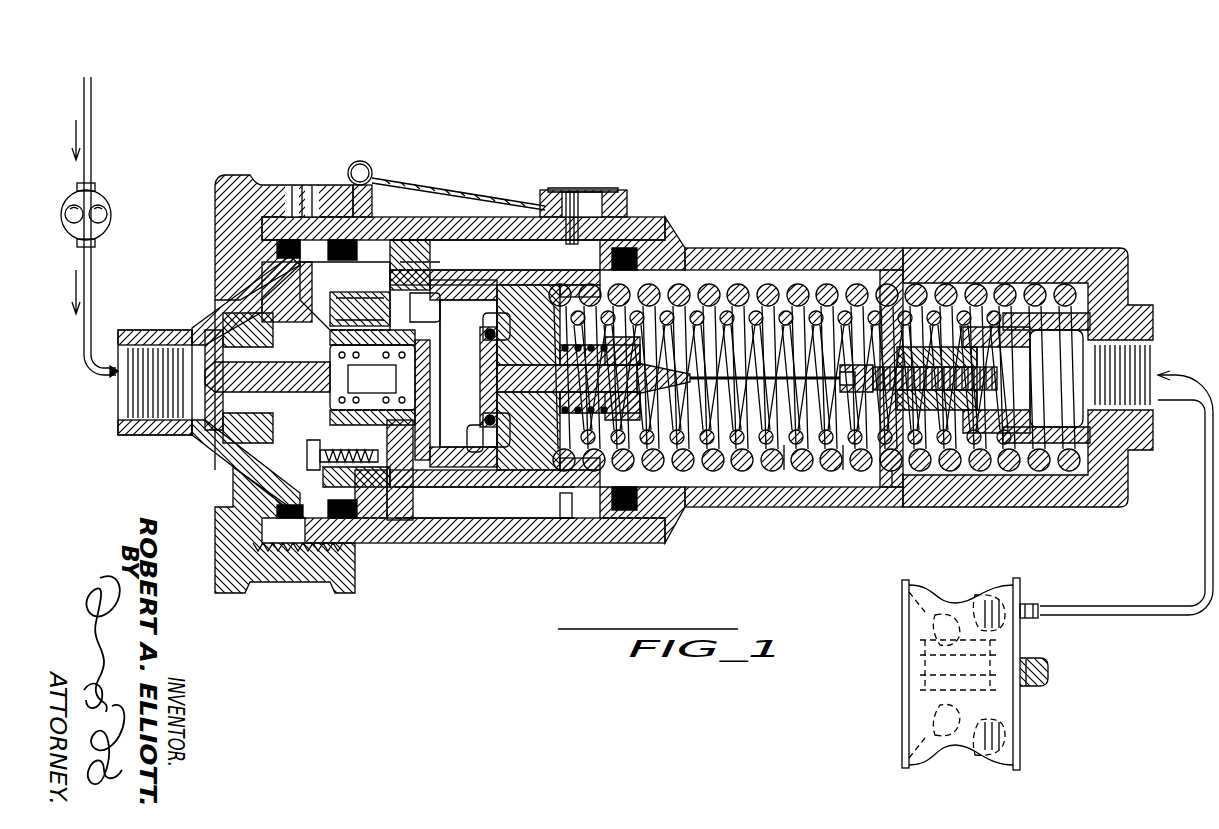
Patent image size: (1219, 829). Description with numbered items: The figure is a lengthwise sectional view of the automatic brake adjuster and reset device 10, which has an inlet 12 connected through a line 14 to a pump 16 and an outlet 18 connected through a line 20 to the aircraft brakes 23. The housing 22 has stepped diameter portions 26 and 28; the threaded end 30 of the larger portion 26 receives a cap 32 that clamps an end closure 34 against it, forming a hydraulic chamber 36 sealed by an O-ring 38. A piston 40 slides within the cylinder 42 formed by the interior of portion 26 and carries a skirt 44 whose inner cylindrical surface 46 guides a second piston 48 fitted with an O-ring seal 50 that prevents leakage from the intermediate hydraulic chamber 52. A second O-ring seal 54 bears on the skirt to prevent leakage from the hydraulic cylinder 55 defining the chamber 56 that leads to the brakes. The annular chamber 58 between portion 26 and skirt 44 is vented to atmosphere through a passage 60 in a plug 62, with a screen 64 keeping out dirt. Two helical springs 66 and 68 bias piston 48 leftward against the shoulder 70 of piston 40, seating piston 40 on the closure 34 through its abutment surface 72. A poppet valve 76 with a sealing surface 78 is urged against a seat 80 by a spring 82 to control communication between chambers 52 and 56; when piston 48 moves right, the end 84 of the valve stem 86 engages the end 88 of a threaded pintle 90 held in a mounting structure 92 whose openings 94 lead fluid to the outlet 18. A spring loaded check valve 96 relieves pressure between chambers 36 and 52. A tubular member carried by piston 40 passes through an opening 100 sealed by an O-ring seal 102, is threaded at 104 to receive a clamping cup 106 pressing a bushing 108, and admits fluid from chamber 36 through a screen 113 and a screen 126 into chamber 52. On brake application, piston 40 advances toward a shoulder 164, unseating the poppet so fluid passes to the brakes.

The automatic brake adjuster and reset device 10 is at (947, 250).
The inlet 12 is at (118, 394).
The line 14 is at (92, 318).
The pump 16 is at (96, 203).
The outlet 18 is at (1155, 404).
The line 20 is at (1205, 490).
The housing 22 is at (855, 258).
The brakes 23 is at (902, 703).
The larger diameter portion 26 is at (462, 217).
The stepped diameter portion 28 is at (786, 266).
The end 30 is at (352, 183).
The cap 32 is at (236, 177).
The end closure 34 is at (248, 276).
The hydraulic chamber 36 is at (292, 472).
The O-ring 38 is at (337, 296).
The piston 40 is at (380, 246).
The cylinder 42 is at (478, 240).
The skirt 44 is at (518, 276).
The cylindrical surface 46 is at (680, 250).
The second piston 48 is at (525, 478).
The O-ring seal 50 is at (460, 475).
The intermediate hydraulic chamber 52 is at (458, 434).
The second O-ring seal 54 is at (620, 528).
The hydraulic cylinder 55 is at (780, 478).
The chamber 56 is at (760, 488).
The annular chamber 58 is at (495, 255).
The passage 60 is at (588, 198).
The plug 62 is at (552, 196).
The screen 64 is at (569, 192).
The helico spring 66 is at (842, 478).
The helico spring 68 is at (886, 478).
The shoulder 70 is at (485, 502).
The abutment surface 72 is at (322, 500).
The poppet valve 76 is at (593, 378).
The sealing surface 78 is at (510, 330).
The seat 80 is at (470, 418).
The spring 82 is at (548, 440).
The end 84 is at (680, 385).
The valve stem 86 is at (630, 370).
The end 88 is at (832, 384).
The threaded pintle 90 is at (986, 372).
The mounting structure 92 is at (1036, 442).
The openings 94 is at (990, 415).
The spring loaded check valve 96 is at (395, 315).
The opening 100 is at (388, 506).
The O-ring seal 102 is at (350, 425).
The threaded portion 104 is at (272, 340).
The clamping cup 106 is at (262, 436).
The bushing 108 is at (215, 437).
The screen 113 is at (207, 410).
The screen 126 is at (430, 316).
The shoulder 164 is at (560, 520).